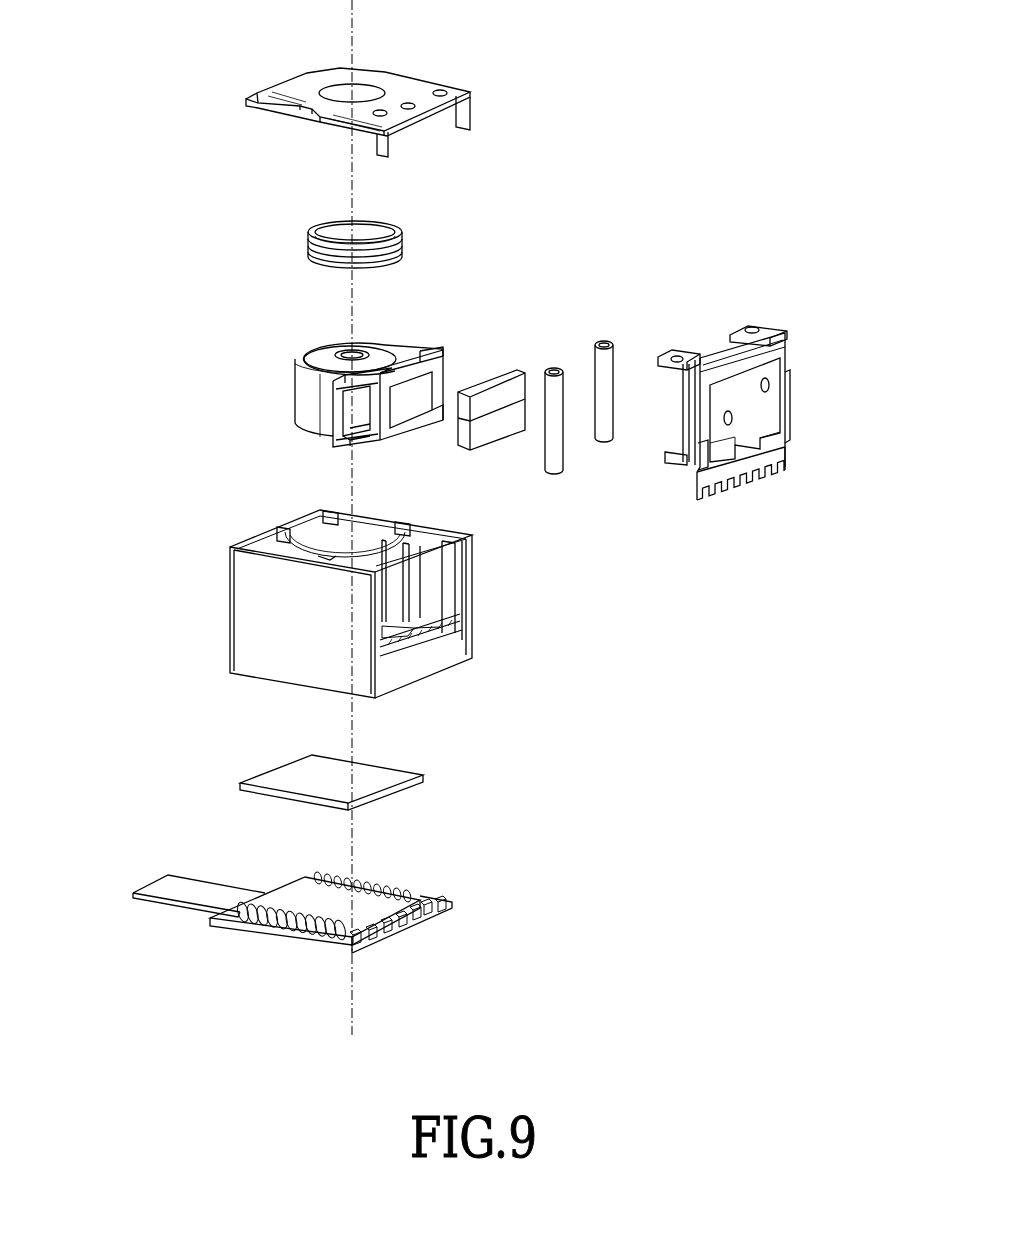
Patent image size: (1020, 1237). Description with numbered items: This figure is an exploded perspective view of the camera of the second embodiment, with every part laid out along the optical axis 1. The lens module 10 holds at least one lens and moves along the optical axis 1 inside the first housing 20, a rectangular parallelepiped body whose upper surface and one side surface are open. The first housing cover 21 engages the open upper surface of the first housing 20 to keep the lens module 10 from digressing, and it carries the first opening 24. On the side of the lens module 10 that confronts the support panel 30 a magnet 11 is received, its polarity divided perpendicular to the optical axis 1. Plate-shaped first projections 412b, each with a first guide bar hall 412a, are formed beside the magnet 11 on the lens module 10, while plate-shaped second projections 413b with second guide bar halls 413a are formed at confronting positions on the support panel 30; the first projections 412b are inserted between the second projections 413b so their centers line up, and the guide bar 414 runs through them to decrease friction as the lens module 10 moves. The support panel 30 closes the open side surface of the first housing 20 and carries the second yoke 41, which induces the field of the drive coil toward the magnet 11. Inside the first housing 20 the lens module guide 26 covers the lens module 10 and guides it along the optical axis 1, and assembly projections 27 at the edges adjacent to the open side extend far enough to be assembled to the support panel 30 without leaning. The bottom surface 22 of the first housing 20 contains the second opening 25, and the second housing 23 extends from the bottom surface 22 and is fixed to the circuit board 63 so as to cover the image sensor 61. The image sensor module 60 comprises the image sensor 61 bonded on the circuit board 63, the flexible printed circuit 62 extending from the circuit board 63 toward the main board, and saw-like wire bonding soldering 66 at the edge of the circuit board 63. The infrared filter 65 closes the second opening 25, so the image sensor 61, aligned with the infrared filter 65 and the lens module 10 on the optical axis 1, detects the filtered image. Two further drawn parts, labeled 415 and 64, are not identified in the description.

The optical axis 1 is at (353, 5).
The first housing cover 21 is at (340, 93).
The first opening 24 is at (366, 86).
The coil 415 is at (405, 241).
The lens module 10 is at (364, 378).
The first guide bar hall 412a is at (432, 357).
The first projection 412b is at (345, 416).
The magnet 11 is at (505, 368).
The guide bar 414 is at (604, 346).
The support panel 30 is at (715, 377).
The second yoke 41 is at (768, 400).
The second guide bar hall 413a is at (752, 329).
The second projection 413b is at (664, 366).
The first housing 20 is at (345, 621).
The lens module guide 26 is at (265, 530).
The assembly projection 27 is at (455, 610).
The bottom surface 22 is at (433, 634).
The second housing 23 is at (427, 662).
The second opening 25 is at (387, 638).
The image sensor module 60 is at (100, 775).
The infrared filter 65 is at (250, 773).
The image sensor 61 is at (300, 880).
The flexible printed circuit 62 is at (210, 886).
The circuit board 63 is at (255, 907).
The contact pads 64 is at (356, 944).
The saw-like wire bonding soldering 66 is at (358, 951).